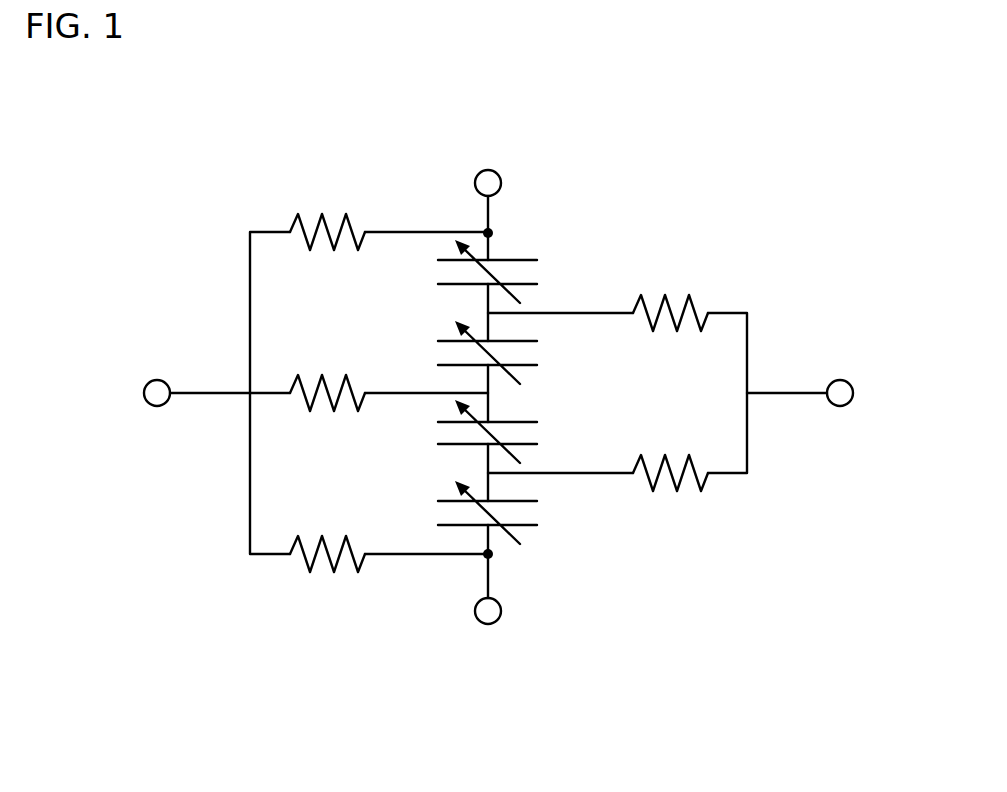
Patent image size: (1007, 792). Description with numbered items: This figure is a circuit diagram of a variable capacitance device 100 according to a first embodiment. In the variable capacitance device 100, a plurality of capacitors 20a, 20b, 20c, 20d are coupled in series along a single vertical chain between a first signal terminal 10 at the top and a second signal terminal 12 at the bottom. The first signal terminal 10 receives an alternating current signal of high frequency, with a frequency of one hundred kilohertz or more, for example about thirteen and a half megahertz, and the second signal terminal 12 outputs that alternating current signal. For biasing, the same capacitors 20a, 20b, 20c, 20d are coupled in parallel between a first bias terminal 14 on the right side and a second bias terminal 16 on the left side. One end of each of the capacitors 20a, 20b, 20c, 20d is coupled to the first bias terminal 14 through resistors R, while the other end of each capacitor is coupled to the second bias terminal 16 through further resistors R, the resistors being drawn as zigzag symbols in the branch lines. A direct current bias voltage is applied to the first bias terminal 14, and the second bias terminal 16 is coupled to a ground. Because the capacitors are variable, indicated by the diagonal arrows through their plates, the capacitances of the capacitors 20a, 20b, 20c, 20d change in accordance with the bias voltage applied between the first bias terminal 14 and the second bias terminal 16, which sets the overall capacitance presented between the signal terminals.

The variable capacitance device 100 is at (667, 157).
The first signal terminal 10 is at (492, 172).
The second signal terminal 12 is at (486, 624).
The first bias terminal 14 is at (843, 380).
The second bias terminal 16 is at (159, 380).
The capacitor 20a is at (535, 272).
The capacitor 20b is at (535, 353).
The capacitor 20c is at (535, 432).
The capacitor 20d is at (535, 512).